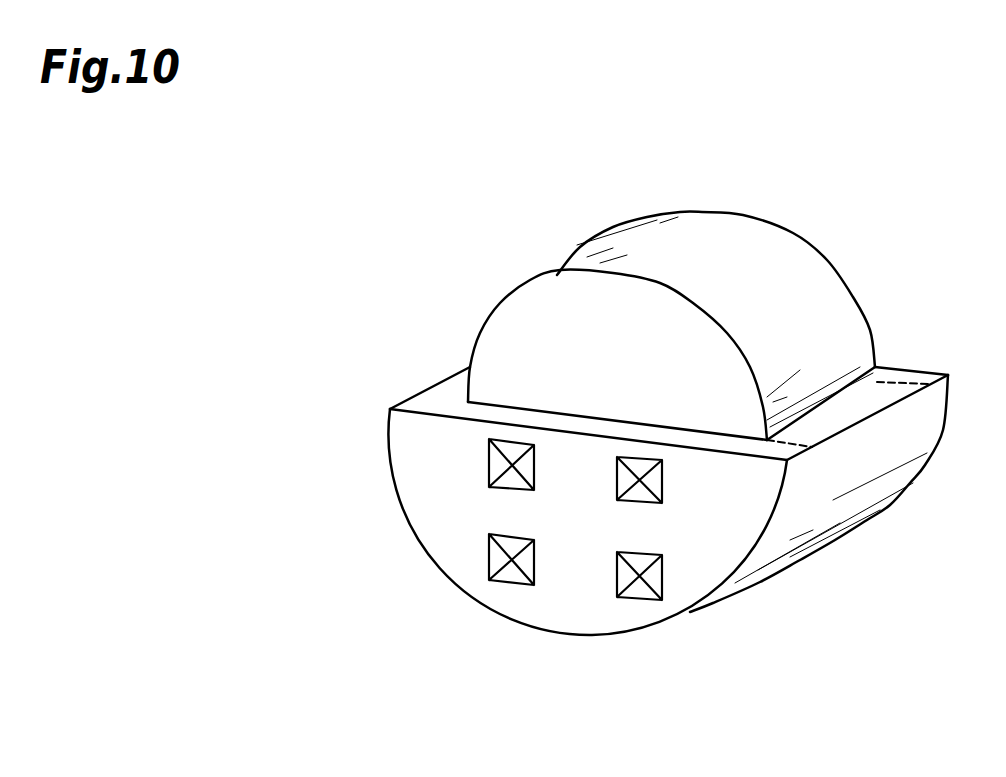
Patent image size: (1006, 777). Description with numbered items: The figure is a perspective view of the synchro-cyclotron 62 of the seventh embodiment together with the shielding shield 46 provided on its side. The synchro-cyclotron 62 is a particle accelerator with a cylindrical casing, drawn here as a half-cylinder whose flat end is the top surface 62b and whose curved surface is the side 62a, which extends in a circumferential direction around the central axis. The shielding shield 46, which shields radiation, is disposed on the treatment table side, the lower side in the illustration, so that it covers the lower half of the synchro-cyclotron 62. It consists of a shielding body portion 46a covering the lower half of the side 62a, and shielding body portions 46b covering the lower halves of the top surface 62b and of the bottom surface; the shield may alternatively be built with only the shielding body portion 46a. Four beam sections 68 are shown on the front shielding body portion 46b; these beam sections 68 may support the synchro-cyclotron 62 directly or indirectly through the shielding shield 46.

The shielding shield 46 is at (647, 465).
The shielding body portion 46a is at (880, 459).
The shielding body portions 46b is at (415, 459).
The synchro-cyclotron 62 is at (648, 287).
The side 62a is at (800, 277).
The top surface 62b is at (518, 340).
The beam sections 68 is at (497, 465).